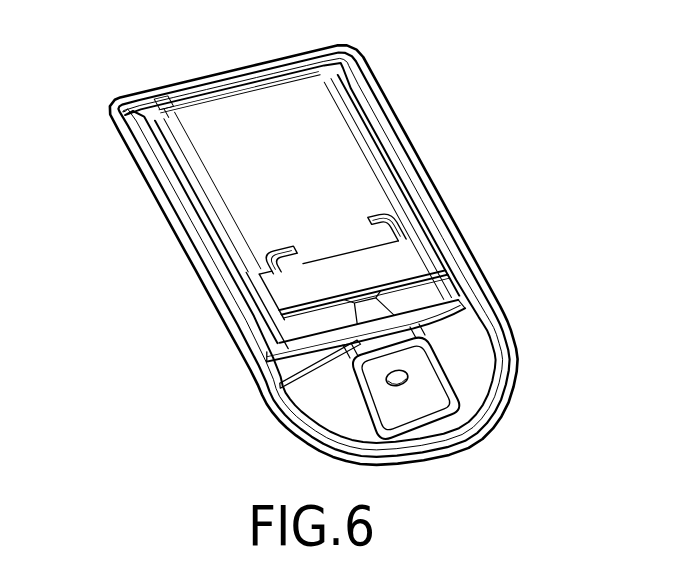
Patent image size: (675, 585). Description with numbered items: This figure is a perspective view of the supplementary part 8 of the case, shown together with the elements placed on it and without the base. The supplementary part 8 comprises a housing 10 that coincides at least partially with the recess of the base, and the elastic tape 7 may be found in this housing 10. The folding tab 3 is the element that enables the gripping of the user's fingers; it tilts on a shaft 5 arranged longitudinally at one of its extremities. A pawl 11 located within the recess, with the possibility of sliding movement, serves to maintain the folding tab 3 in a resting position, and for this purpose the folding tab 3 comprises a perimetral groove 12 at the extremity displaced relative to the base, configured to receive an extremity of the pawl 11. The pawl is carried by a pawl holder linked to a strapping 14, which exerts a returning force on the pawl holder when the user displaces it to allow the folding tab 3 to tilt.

The folding tab 3 is at (261, 115).
The shaft 5 is at (128, 108).
The elastic tape 7 is at (420, 393).
The supplementary part 8 is at (487, 357).
The housing 10 is at (408, 213).
The pawl 11 is at (407, 243).
The perimetral groove 12 is at (280, 266).
The strapping 14 is at (325, 357).